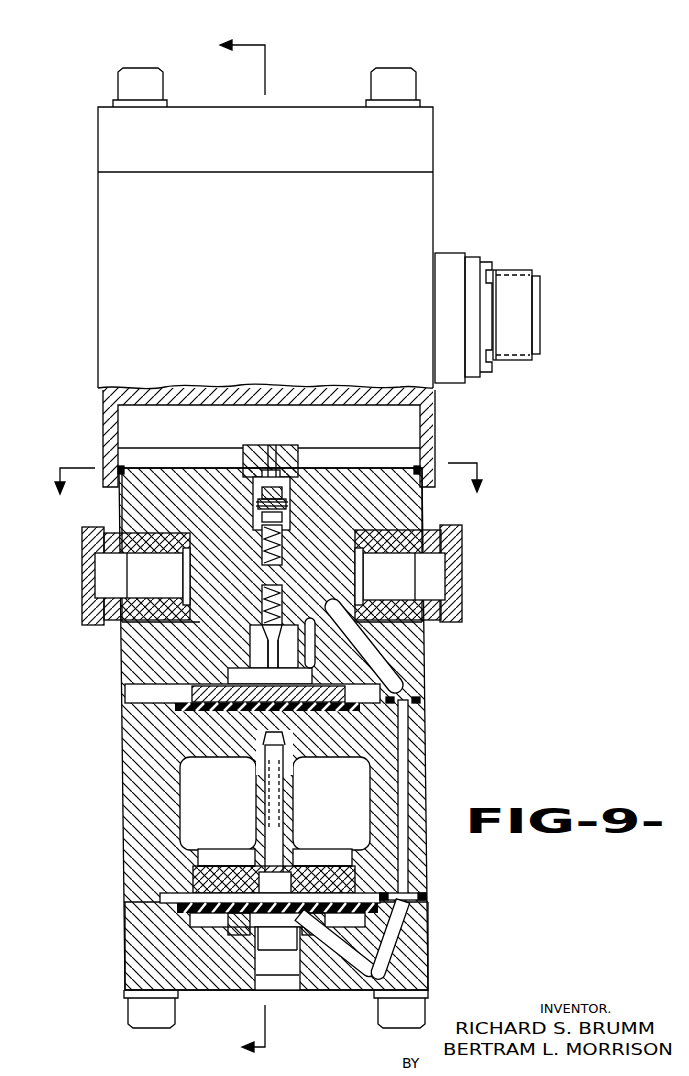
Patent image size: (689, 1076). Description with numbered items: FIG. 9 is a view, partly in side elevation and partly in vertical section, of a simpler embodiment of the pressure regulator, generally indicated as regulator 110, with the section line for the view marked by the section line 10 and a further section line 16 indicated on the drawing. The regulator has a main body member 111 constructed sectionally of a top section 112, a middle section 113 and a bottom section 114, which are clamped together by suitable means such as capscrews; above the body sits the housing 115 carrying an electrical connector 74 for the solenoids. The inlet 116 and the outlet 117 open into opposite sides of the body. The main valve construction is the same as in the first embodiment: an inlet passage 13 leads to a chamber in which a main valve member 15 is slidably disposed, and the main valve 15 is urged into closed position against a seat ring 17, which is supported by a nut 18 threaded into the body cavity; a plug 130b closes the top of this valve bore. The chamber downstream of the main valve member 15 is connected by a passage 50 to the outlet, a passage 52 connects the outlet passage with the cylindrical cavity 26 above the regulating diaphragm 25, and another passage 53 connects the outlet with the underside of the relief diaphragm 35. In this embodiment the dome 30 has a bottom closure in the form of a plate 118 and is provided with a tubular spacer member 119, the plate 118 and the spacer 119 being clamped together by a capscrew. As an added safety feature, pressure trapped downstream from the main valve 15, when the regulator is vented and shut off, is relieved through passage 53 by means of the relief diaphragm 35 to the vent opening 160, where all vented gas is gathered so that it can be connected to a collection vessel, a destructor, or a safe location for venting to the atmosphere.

The pressure regulator 10 is at (231, 549).
The inlet passage 13 is at (212, 585).
The main valve member 15 is at (296, 640).
The spring 16 is at (271, 494).
The seat ring 17 is at (262, 600).
The nut 18 is at (258, 684).
The regulating diaphragm 25 is at (186, 733).
The cylindrical cavity 26 is at (272, 683).
The dome 30 is at (372, 787).
The relief diaphragm 35 is at (203, 913).
The passage 50 is at (290, 624).
The passage 52 is at (314, 630).
The passage 53 is at (365, 652).
The electrical connector 74 is at (510, 267).
The regulator 110 is at (526, 387).
The main body member 111 is at (432, 739).
The top section 112 is at (420, 510).
The middle section 113 is at (122, 852).
The bottom section 114 is at (126, 948).
The housing 115 is at (437, 188).
The inlet 116 is at (97, 578).
The outlet 117 is at (447, 576).
The plate 118 is at (309, 862).
The tubular spacer member 119 is at (262, 807).
The plug 130b is at (305, 447).
The vent opening 160 is at (290, 968).